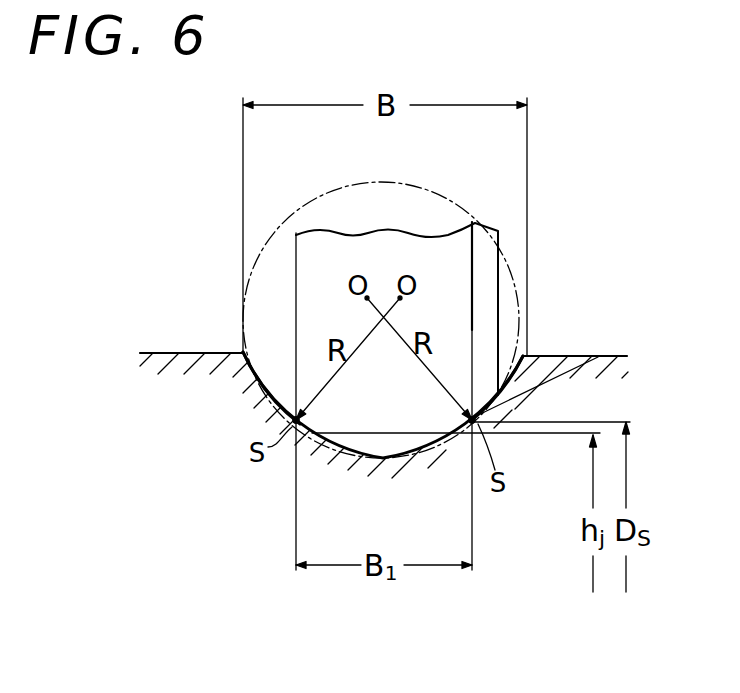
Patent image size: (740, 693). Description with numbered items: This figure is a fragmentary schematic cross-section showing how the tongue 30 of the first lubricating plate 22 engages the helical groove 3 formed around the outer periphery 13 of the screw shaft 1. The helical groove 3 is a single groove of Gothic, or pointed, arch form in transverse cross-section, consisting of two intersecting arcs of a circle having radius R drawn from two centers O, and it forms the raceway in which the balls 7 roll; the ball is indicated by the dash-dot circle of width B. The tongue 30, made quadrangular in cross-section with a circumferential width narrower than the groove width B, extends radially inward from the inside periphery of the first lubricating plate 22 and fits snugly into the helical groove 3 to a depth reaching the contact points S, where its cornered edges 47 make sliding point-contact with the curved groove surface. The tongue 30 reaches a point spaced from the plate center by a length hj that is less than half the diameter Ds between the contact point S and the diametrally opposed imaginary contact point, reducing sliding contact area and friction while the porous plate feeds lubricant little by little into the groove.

The screw shaft 1 is at (557, 356).
The helical groove 3 is at (272, 388).
The balls 7 is at (403, 200).
The outer periphery 13 is at (172, 352).
The first lubricating plate 22 is at (443, 273).
The tongue 30 is at (393, 404).
The cornered edges 47 is at (283, 423).